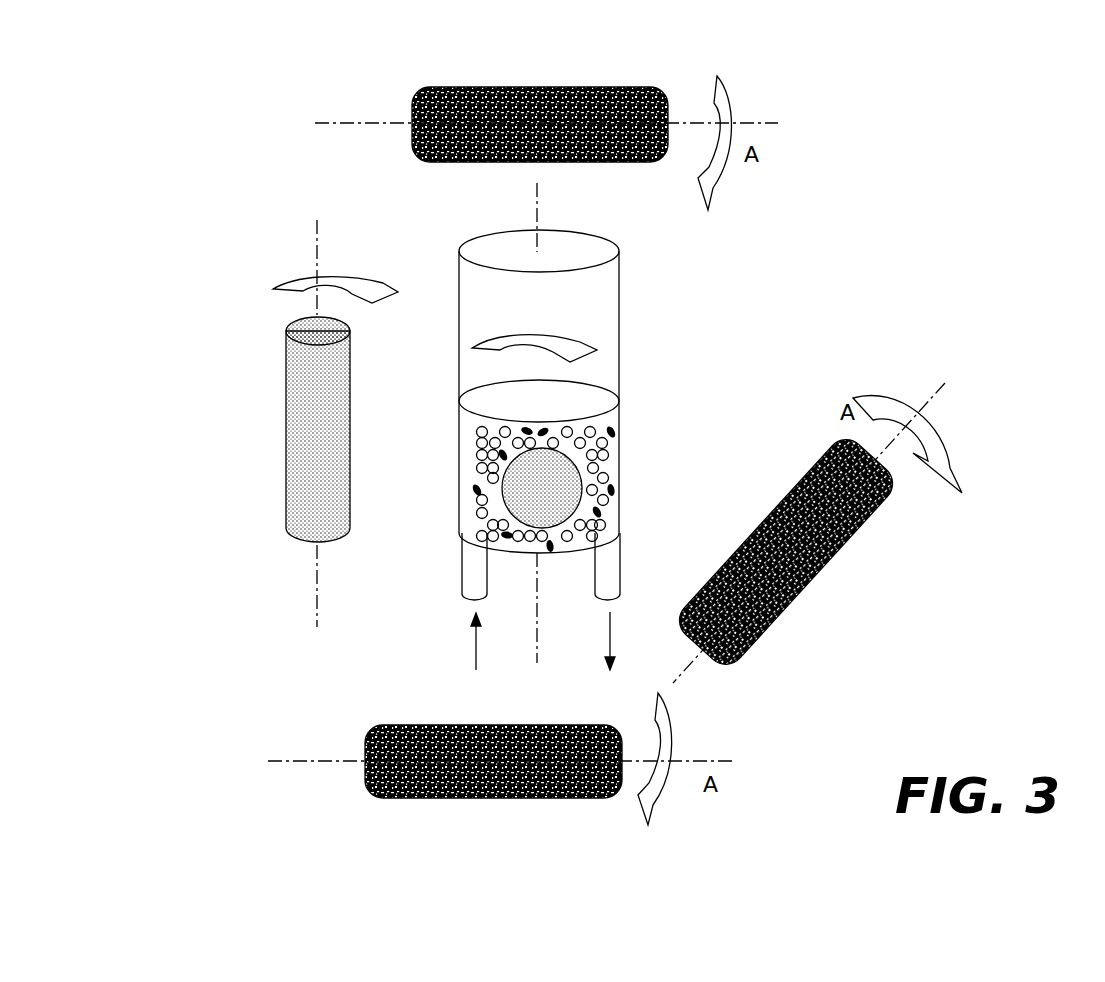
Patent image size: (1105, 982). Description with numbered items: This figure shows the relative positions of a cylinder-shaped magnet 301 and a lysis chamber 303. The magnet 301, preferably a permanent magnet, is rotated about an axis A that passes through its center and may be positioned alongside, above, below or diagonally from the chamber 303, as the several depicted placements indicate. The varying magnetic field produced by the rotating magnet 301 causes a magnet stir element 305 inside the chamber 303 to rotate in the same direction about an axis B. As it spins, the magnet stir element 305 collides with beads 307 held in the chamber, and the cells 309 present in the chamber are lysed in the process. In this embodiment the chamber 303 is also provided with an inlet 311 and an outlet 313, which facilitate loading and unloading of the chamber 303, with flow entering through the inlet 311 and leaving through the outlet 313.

The magnet 301 is at (285, 512).
The lysis chamber 303 is at (603, 315).
The magnet stir element 305 is at (557, 497).
The beads 307 is at (597, 460).
The cells 309 is at (608, 420).
The inlet 311 is at (473, 573).
The outlet 313 is at (610, 573).